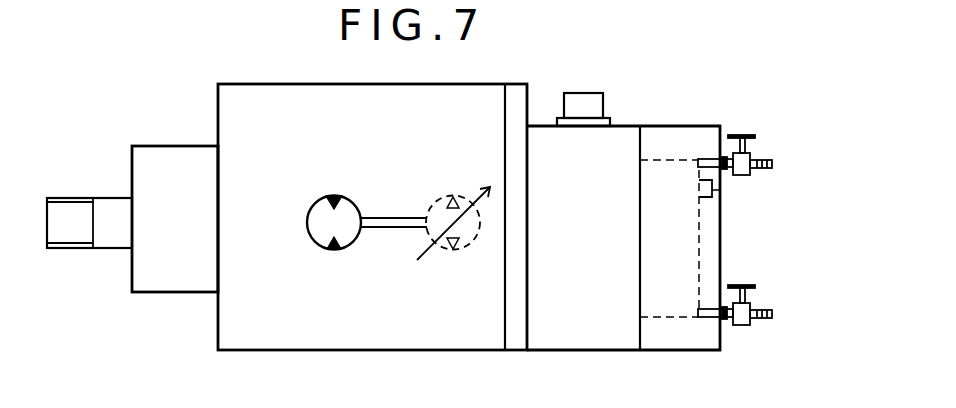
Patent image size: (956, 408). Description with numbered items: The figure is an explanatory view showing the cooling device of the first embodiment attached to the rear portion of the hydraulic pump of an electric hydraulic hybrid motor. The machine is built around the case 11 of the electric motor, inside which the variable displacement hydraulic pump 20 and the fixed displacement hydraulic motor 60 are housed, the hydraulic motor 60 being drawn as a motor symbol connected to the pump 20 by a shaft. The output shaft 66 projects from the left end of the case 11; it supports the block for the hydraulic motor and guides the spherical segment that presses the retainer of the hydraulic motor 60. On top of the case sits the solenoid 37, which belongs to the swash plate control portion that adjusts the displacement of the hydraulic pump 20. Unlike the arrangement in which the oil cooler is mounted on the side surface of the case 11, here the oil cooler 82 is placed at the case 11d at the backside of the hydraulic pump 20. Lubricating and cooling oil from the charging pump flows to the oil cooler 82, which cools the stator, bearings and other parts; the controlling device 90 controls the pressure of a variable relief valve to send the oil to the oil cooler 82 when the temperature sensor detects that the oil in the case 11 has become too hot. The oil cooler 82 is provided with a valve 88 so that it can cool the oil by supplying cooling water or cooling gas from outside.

The case 11 is at (418, 338).
The case 11d is at (642, 280).
The variable displacement hydraulic pump 20 is at (452, 197).
The solenoid 37 is at (580, 100).
The fixed displacement hydraulic motor 60 is at (318, 195).
The output shaft 66 is at (112, 207).
The oil cooler 82 is at (687, 245).
The valve 88 is at (756, 326).
The controlling device 90 is at (714, 190).